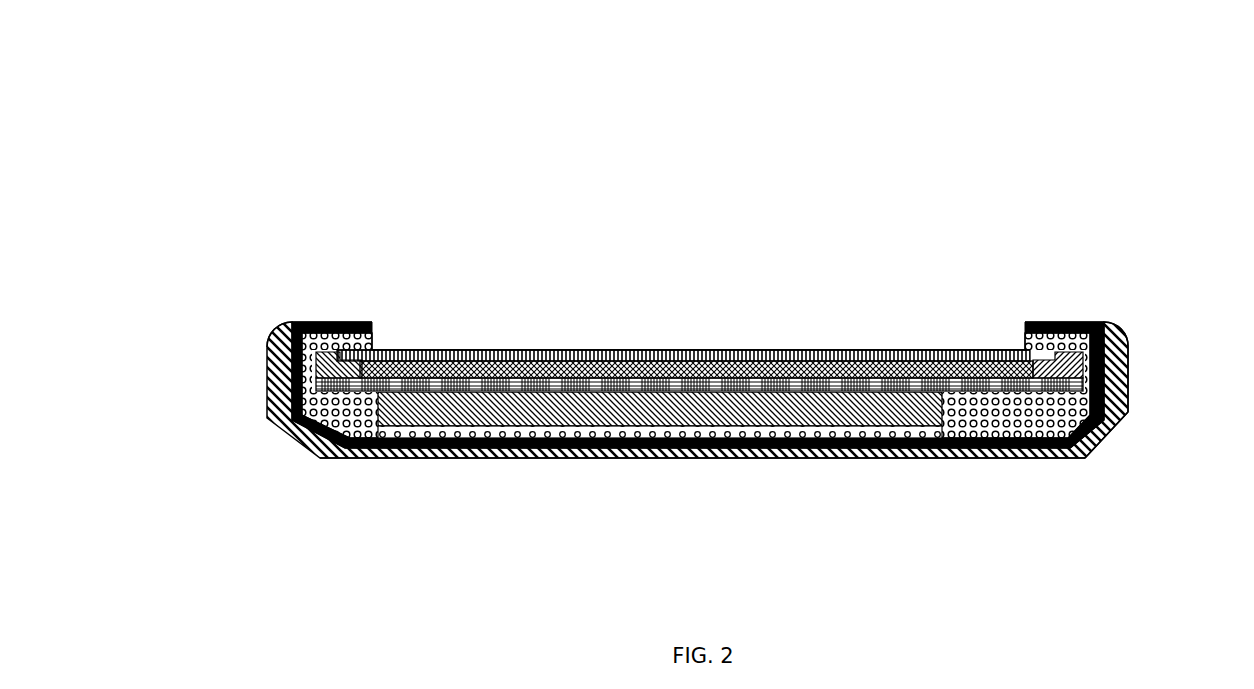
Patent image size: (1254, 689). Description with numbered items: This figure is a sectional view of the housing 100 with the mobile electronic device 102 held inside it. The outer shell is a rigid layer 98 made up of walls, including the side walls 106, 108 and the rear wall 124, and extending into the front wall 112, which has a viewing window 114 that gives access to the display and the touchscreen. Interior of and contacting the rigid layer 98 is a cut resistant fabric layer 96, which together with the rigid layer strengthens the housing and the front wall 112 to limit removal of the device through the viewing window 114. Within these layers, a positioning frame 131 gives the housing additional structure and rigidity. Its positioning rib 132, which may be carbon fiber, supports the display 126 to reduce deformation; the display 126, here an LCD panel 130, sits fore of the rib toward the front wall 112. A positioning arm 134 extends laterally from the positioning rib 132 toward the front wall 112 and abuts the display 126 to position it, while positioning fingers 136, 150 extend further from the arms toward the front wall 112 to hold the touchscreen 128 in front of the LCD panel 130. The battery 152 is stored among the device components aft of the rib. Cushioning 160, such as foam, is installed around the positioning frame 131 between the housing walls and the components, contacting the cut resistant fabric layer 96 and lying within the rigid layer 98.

The cut resistant fabric layer 96 is at (1108, 433).
The rigid layer 98 is at (1075, 443).
The housing 100 is at (1063, 297).
The mobile electronic device 102 is at (688, 320).
The wall 106 is at (268, 387).
The wall 108 is at (1128, 375).
The front wall 112 is at (1108, 318).
The viewing window 114 is at (765, 332).
The rear wall 124 is at (422, 457).
The display 126 is at (843, 356).
The touchscreen 128 is at (412, 352).
The LCD panel 130 is at (462, 368).
The positioning frame 131 is at (522, 385).
The positioning rib 132 is at (608, 388).
The positioning arm 134 is at (330, 360).
The positioning finger 136 is at (297, 338).
The positioning finger 150 is at (1085, 322).
The battery 152 is at (785, 408).
The cushioning 160 is at (972, 415).